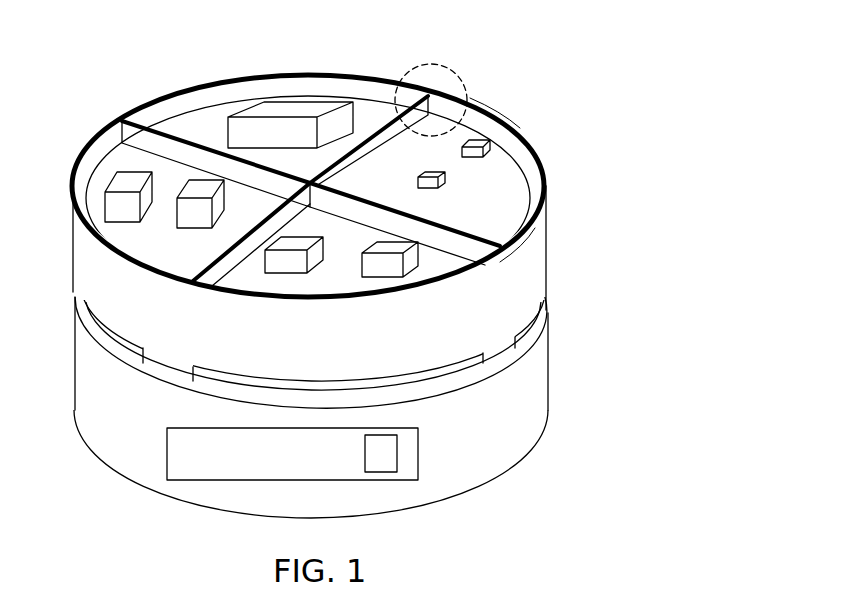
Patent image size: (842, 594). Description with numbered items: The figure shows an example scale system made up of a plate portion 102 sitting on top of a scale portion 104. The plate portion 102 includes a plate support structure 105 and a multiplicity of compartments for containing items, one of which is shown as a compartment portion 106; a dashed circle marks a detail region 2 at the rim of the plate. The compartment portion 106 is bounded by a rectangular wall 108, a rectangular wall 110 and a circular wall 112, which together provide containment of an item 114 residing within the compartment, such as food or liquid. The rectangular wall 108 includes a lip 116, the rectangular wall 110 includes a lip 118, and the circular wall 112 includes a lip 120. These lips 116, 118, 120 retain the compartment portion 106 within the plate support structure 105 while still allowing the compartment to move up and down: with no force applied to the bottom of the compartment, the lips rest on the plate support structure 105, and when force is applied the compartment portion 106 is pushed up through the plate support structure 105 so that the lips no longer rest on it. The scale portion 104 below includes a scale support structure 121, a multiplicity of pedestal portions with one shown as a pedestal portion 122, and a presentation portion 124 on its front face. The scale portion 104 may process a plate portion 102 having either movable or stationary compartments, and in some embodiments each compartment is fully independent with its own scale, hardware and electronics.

The detail region 2 is at (444, 62).
The plate portion 102 is at (533, 140).
The scale portion 104 is at (553, 342).
The plate support structure 105 is at (547, 160).
The compartment portion 106 is at (492, 189).
The rectangular wall 108 is at (377, 134).
The rectangular wall 110 is at (447, 243).
The circular wall 112 is at (497, 108).
The item 114 is at (495, 134).
The lip 116 is at (320, 164).
The lip 118 is at (465, 221).
The lip 120 is at (534, 235).
The scale support structure 121 is at (458, 500).
The pedestal portion 122 is at (485, 368).
The presentation portion 124 is at (248, 461).